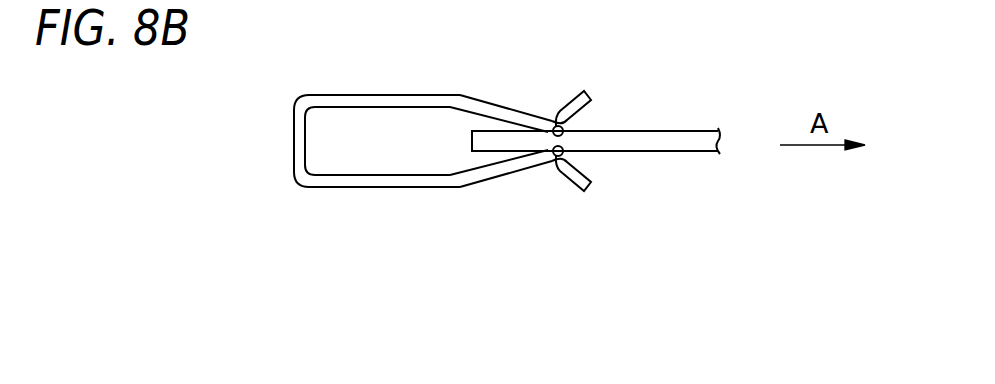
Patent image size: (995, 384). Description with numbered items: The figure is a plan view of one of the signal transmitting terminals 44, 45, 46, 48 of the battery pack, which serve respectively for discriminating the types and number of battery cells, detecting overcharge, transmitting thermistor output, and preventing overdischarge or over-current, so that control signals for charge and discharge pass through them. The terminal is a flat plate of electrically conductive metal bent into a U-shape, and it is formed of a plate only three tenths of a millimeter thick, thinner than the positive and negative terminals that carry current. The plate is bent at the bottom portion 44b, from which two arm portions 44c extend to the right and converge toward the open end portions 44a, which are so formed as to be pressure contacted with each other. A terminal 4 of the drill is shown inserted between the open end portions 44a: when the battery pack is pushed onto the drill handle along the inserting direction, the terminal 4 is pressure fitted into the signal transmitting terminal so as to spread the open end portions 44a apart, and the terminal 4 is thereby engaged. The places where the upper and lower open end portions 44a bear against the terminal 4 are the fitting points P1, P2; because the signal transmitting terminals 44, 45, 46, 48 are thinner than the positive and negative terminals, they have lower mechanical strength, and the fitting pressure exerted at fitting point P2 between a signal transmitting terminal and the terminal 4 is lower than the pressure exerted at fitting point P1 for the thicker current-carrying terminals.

The signal transmitting terminal 44 is at (432, 163).
The signal transmitting terminal 45 is at (432, 163).
The signal transmitting terminal 46 is at (432, 163).
The signal transmitting terminal 48 is at (400, 187).
The open end portion 44a is at (592, 102).
The bottom portion 44b is at (293, 143).
The arm portion 44c is at (382, 95).
The fitting point P1 is at (556, 127).
The fitting point P2 is at (556, 158).
The terminal 4 is at (673, 130).